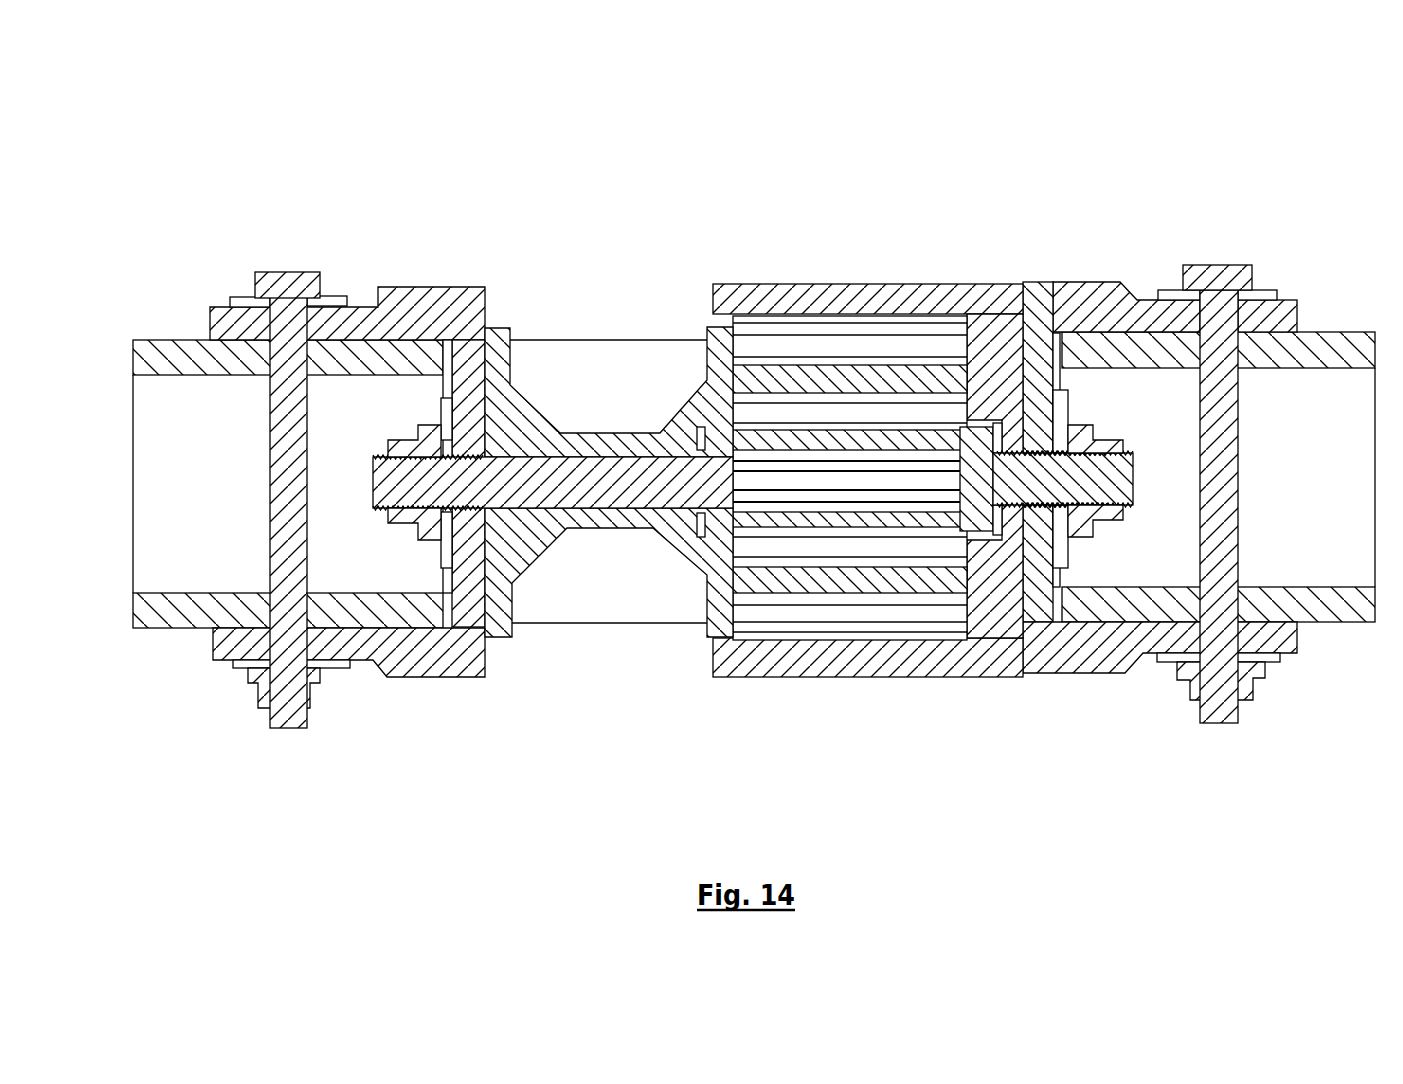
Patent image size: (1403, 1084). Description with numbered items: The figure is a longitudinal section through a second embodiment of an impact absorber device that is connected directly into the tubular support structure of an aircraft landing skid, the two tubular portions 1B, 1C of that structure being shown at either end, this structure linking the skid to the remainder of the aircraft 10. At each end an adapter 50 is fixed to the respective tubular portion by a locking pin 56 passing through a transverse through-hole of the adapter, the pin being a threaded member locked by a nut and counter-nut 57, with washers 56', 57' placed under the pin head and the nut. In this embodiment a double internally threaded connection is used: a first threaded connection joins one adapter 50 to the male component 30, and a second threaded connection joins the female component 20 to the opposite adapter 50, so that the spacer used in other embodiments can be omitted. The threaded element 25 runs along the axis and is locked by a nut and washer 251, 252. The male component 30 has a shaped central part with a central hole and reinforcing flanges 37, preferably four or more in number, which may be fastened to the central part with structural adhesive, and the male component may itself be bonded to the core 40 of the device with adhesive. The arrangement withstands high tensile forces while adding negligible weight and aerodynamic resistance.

The aircraft 10 is at (698, 206).
The tubular portion 1B is at (175, 630).
The downstream pipe section 1C is at (1338, 618).
The female component 20 is at (763, 675).
The threaded element 25 is at (602, 453).
The male component 30 is at (554, 650).
The reinforcing flanges 37 is at (640, 624).
The rotor 40 is at (880, 356).
The adapter 50 is at (449, 263).
The locking pin 56 is at (722, 453).
The bolt washer 56' is at (785, 250).
The nut and counter-nut 57 is at (745, 745).
The nut washer 57' is at (756, 735).
The nut 251 is at (425, 428).
The washer 252 is at (440, 553).